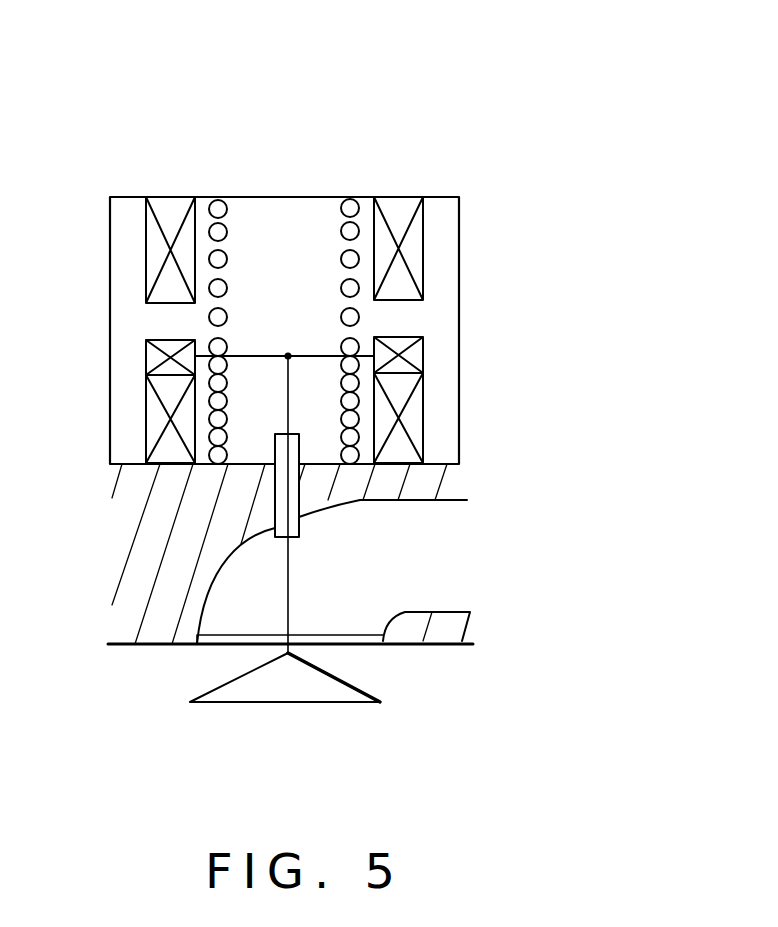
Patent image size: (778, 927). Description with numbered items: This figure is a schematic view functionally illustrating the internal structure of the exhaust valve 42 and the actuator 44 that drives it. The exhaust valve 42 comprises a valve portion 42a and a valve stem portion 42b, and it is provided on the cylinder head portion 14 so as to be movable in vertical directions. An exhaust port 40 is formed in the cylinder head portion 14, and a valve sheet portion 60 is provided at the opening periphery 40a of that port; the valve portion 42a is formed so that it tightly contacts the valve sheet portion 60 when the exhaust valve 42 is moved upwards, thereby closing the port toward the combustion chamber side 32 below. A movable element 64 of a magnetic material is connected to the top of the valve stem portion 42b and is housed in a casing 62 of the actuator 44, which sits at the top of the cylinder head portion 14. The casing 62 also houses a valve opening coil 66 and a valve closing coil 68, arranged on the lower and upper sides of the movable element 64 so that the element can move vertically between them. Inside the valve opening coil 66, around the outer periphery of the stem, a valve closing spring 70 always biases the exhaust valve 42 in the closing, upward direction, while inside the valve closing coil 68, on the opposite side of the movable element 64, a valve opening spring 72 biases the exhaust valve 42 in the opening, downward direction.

The actuator 44 is at (253, 104).
The casing 62 is at (460, 233).
The valve closing coil 68 is at (147, 252).
The valve opening coil 66 is at (147, 433).
The movable element 64 is at (423, 353).
The valve opening spring 72 is at (349, 197).
The valve closing spring 70 is at (215, 467).
The cylinder head portion 14 is at (152, 647).
The exhaust valve 42 is at (369, 563).
The valve stem portion 42b is at (290, 568).
The valve portion 42a is at (285, 712).
The valve sheet portion 60 is at (207, 645).
The opening periphery 40a is at (218, 645).
The exhaust port 40 is at (457, 590).
The gap 32 is at (440, 681).